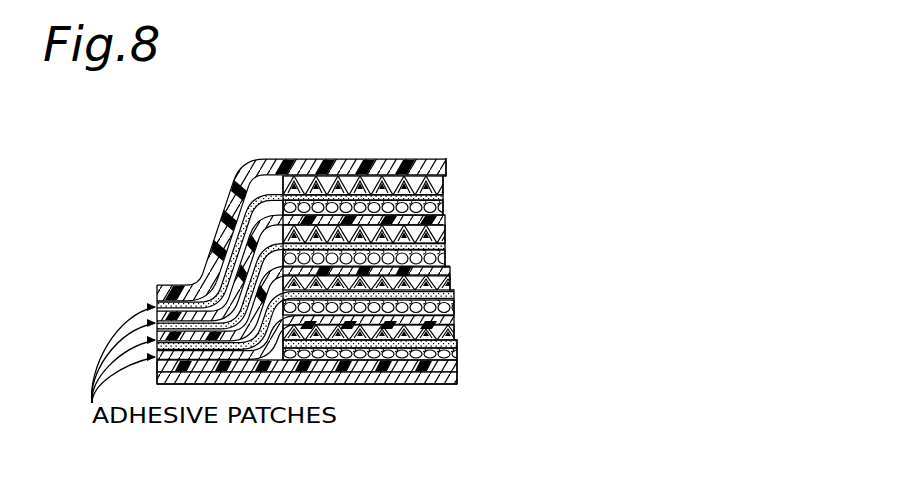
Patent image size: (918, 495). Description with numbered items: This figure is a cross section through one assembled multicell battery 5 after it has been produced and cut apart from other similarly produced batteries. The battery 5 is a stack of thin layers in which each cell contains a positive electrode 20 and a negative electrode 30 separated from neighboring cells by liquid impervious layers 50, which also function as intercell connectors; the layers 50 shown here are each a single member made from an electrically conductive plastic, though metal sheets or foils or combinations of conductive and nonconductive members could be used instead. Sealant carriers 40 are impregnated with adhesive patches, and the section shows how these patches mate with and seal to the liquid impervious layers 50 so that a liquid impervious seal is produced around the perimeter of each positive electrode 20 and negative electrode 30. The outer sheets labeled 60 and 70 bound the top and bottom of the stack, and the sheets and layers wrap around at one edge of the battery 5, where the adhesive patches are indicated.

The multicell battery 5 is at (321, 152).
The positive electrode 20 is at (443, 193).
The negative electrode 30 is at (443, 219).
The sealant carrier 40 is at (443, 206).
The liquid impervious layer 50 is at (443, 181).
The top cover sheet 60 is at (446, 172).
The base sheet 70 is at (459, 376).